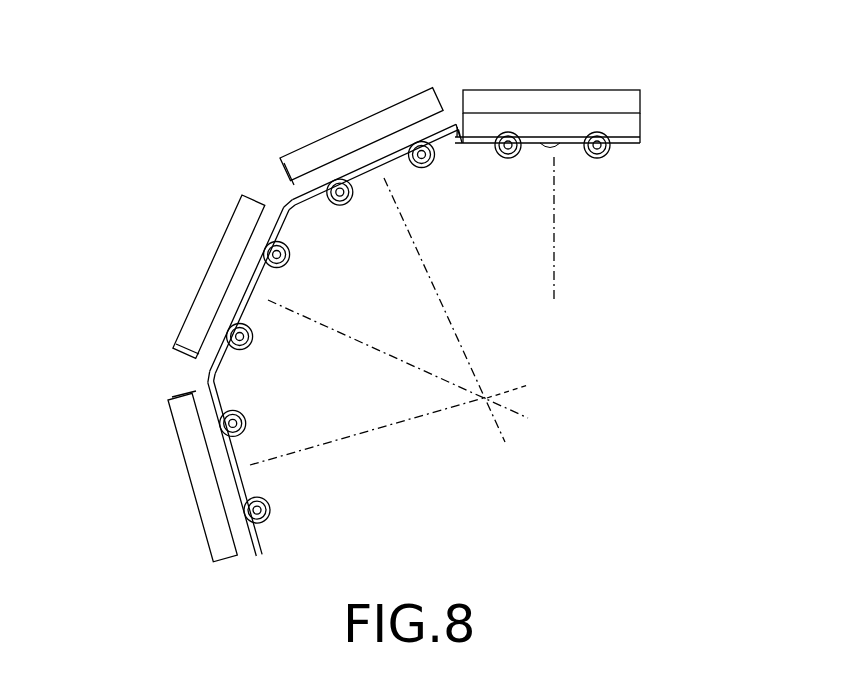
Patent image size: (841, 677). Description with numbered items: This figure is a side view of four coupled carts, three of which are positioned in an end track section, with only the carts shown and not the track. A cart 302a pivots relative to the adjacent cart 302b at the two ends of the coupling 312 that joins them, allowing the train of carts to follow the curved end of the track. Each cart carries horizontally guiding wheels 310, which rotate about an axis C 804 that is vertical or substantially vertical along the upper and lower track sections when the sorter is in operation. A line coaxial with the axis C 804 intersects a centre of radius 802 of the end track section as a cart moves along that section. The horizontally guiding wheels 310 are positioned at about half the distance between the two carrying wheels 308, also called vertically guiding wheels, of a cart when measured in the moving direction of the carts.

The cart 302a is at (213, 218).
The adjacent cart 302b is at (318, 117).
The carrying wheels 308 is at (266, 512).
The horizontally guiding wheels 310 is at (392, 173).
The coupling 312 is at (318, 228).
The centre of radius 802 is at (507, 398).
The axis C 804 is at (557, 214).